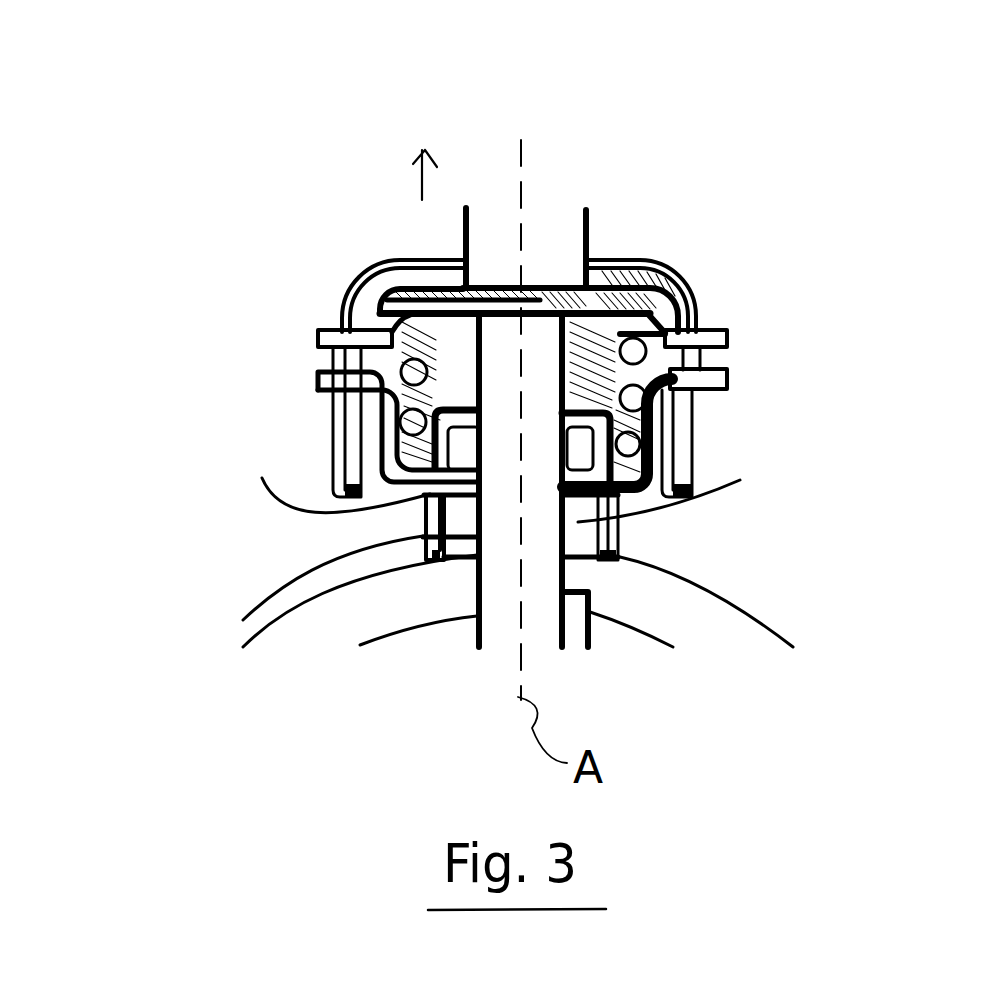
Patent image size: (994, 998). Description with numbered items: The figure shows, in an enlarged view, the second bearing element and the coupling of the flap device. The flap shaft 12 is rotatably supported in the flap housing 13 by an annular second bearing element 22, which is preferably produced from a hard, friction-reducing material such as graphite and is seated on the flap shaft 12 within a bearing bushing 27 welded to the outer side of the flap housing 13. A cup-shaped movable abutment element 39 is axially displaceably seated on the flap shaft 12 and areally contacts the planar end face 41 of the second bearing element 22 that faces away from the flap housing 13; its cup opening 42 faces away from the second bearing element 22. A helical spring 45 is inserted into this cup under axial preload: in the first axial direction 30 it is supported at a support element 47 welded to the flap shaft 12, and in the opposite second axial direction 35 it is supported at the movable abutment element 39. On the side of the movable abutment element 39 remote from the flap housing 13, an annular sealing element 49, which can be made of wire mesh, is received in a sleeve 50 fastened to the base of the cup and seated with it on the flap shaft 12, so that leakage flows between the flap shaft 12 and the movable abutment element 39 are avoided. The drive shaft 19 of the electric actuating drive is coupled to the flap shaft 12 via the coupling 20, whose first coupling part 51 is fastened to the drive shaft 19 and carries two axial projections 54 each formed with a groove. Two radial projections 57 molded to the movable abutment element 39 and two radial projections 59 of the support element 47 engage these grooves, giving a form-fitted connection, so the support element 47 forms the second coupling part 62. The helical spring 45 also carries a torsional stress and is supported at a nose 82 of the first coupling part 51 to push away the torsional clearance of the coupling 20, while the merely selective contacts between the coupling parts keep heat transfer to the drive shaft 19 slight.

The flap shaft 12 is at (544, 468).
The flap housing 13 is at (680, 600).
The drive shaft 19 is at (383, 266).
The coupling 20 is at (775, 353).
The second bearing element 22 is at (718, 502).
The bearing bushing 27 is at (607, 537).
The first axial direction 30 is at (463, 242).
The second axial direction 35 is at (304, 437).
The movable abutment element 39 is at (280, 497).
The planar end face 41 is at (422, 495).
The cup opening 42 is at (395, 283).
The helical spring 45 is at (590, 320).
The support element 47 is at (613, 327).
The sealing element 49 is at (573, 450).
The sleeve 50 is at (697, 332).
The first coupling part 51 is at (673, 270).
The axial projections 54 is at (330, 480).
The radial projections 57 is at (318, 378).
The radial projections 59 is at (318, 335).
The second coupling part 62 is at (340, 312).
The nose 82 is at (360, 264).